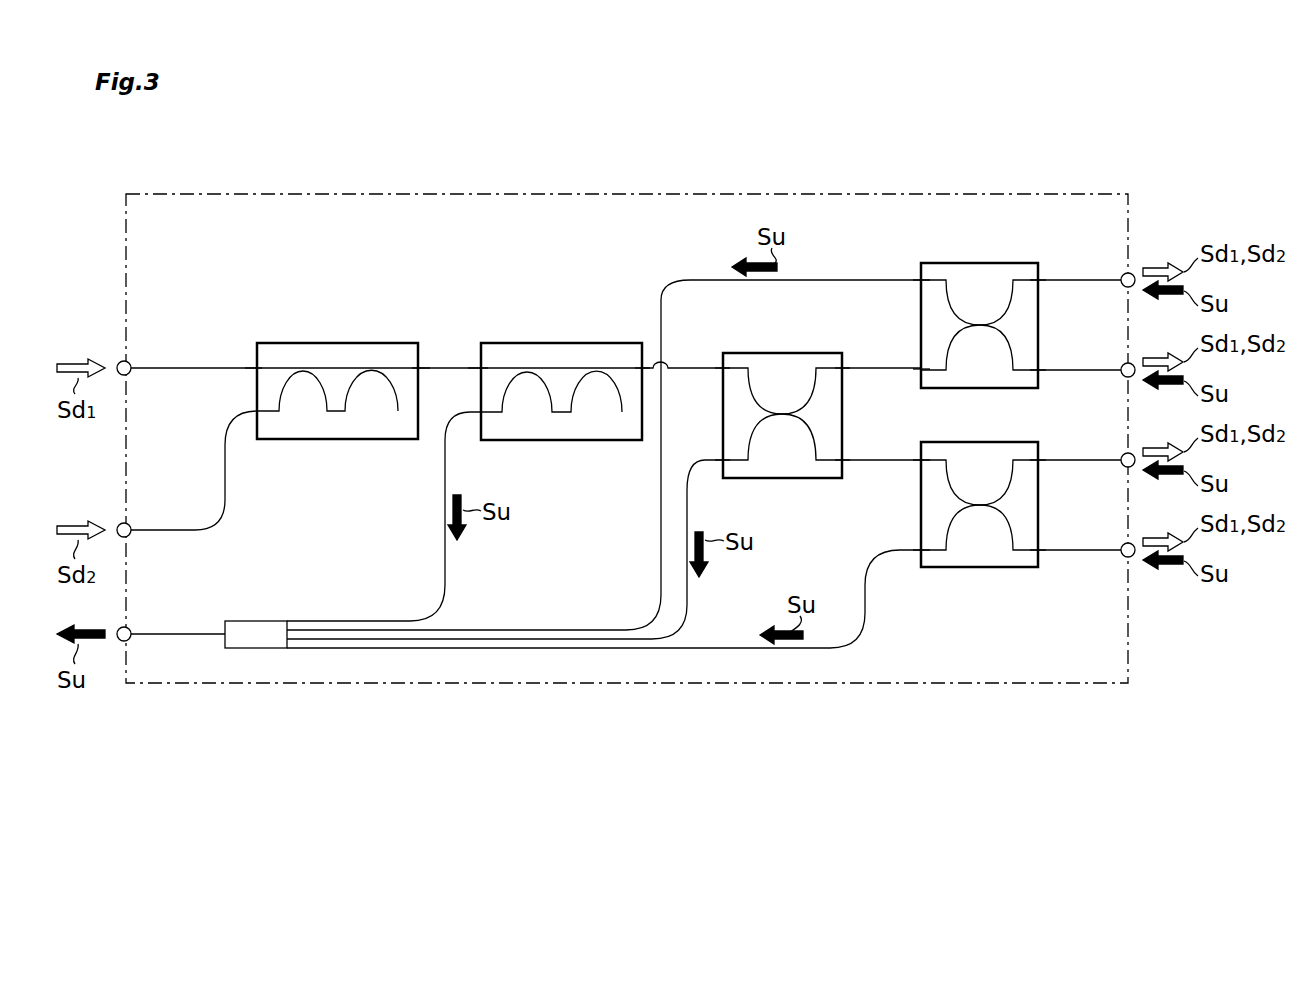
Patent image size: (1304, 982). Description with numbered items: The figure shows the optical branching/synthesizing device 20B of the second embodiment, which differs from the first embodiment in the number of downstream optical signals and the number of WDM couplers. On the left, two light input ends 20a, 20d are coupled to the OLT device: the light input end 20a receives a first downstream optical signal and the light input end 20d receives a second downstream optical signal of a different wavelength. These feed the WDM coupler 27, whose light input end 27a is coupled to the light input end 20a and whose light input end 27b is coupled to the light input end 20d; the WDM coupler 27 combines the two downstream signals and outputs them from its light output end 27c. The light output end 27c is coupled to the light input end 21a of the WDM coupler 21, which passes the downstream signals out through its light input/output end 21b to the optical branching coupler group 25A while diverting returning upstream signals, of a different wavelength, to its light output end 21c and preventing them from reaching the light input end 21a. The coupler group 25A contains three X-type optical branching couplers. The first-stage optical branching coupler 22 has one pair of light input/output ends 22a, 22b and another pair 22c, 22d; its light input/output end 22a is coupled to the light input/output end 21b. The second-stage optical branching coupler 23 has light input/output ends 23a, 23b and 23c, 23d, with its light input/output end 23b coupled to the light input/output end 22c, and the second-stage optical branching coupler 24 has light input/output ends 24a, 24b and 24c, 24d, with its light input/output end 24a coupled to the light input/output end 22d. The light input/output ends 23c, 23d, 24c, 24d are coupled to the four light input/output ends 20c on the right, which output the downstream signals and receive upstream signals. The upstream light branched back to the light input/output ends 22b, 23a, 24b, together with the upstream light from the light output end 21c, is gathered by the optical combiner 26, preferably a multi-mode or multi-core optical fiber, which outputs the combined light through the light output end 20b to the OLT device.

The optical branching/synthesizing device 20B is at (568, 193).
The optical branching coupler group 25A is at (833, 208).
The light input end 20a is at (131, 362).
The light output end 20b is at (131, 628).
The light input/output ends 20c is at (1133, 275).
The light input end 20d is at (131, 524).
The WDM coupler 21 is at (551, 343).
The light input end 21a is at (477, 366).
The light input/output end 21b is at (645, 366).
The light output end 21c is at (481, 413).
The optical branching coupler 22 is at (775, 353).
The light input/output end 22a is at (720, 368).
The light input/output end 22b is at (722, 460).
The light input/output end 22c is at (843, 368).
The light input/output end 22d is at (843, 462).
The optical branching coupler 23 is at (990, 263).
The light input/output end 23a is at (920, 280).
The light input/output end 23b is at (920, 371).
The light input/output end 23c is at (1039, 280).
The light input/output end 23d is at (1039, 370).
The optical branching coupler 24 is at (990, 442).
The light input/output end 24a is at (920, 460).
The light input/output end 24b is at (920, 550).
The light input/output end 24c is at (1039, 460).
The light input/output end 24d is at (1039, 550).
The optical combiner 26 is at (262, 621).
The WDM coupler 27 is at (340, 343).
The light input end 27a is at (253, 366).
The light input end 27b is at (257, 412).
The light output end 27c is at (421, 366).